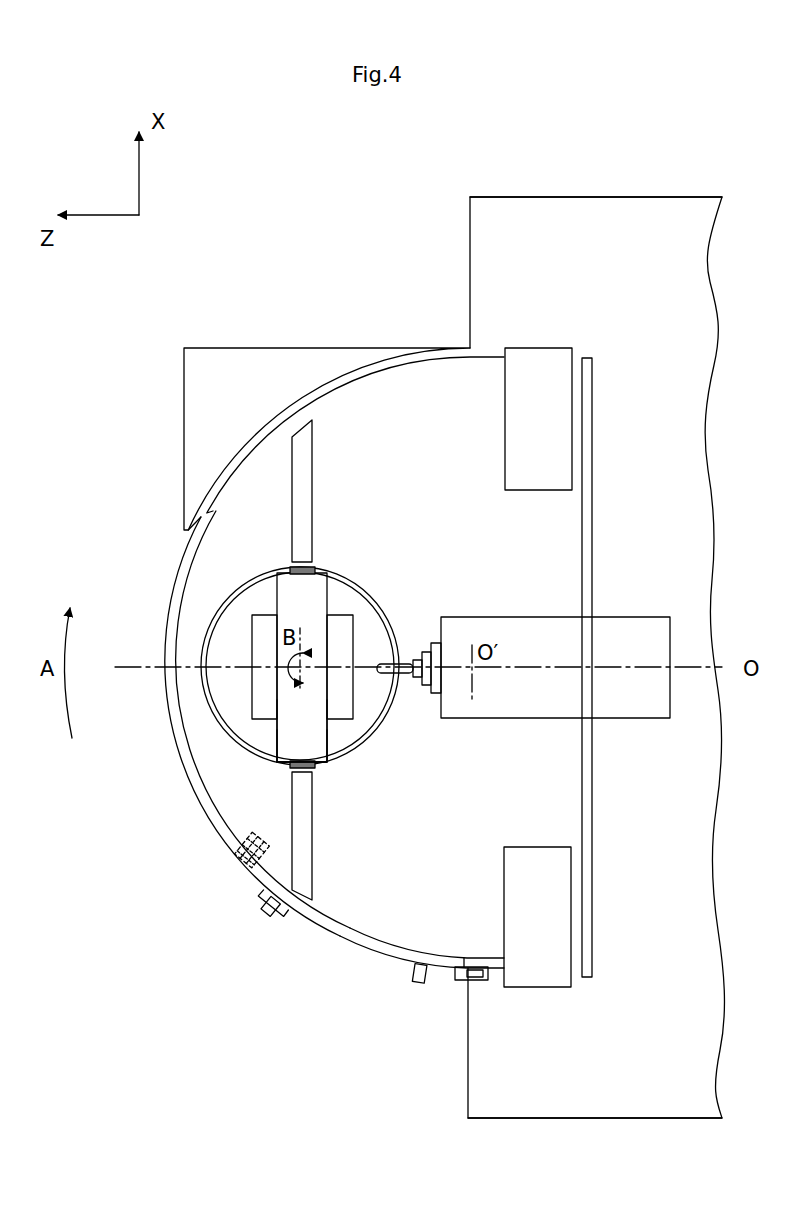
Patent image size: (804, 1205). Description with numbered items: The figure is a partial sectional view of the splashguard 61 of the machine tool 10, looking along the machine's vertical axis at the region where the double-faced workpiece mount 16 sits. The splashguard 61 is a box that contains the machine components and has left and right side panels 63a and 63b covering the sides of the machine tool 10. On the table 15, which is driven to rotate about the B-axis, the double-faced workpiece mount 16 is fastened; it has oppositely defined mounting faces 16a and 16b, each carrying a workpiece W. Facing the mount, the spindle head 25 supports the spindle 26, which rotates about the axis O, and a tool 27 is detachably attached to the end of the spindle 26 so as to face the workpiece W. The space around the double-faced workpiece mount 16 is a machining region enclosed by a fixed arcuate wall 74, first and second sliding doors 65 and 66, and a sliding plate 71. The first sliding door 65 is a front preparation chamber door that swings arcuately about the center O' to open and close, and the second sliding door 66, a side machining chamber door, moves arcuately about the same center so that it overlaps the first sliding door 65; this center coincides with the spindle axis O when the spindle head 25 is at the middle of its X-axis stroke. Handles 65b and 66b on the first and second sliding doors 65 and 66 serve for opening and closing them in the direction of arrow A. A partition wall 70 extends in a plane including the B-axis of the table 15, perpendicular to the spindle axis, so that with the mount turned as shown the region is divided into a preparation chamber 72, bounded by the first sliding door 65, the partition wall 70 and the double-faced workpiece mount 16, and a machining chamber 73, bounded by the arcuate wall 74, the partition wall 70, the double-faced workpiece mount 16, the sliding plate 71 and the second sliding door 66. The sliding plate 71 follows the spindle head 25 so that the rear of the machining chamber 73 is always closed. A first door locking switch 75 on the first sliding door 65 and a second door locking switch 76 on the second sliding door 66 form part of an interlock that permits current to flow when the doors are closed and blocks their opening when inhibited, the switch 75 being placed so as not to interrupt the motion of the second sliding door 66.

The machine tool 10 is at (620, 160).
The splashguard 61 is at (308, 228).
The left side panel 63a is at (572, 196).
The right side panel 63b is at (623, 1120).
The sliding plate 71 is at (597, 420).
The preparation chamber 72 is at (264, 531).
The machining chamber 73 is at (451, 458).
The fixed arcuate wall 74 is at (292, 412).
The first sliding door 65 is at (165, 703).
The handle 65b is at (262, 918).
The second sliding door 66 is at (355, 937).
The handle 66b is at (418, 985).
The partition wall 70 is at (305, 490).
The first door locking switch 75 is at (255, 832).
The second door locking switch 76 is at (460, 988).
The table 15 is at (208, 716).
The double-faced workpiece mount 16 is at (317, 595).
The mounting face 16a is at (262, 742).
The mounting face 16b is at (330, 745).
The workpiece W is at (262, 640).
The spindle head 25 is at (615, 627).
The spindle 26 is at (432, 645).
The tool 27 is at (383, 680).